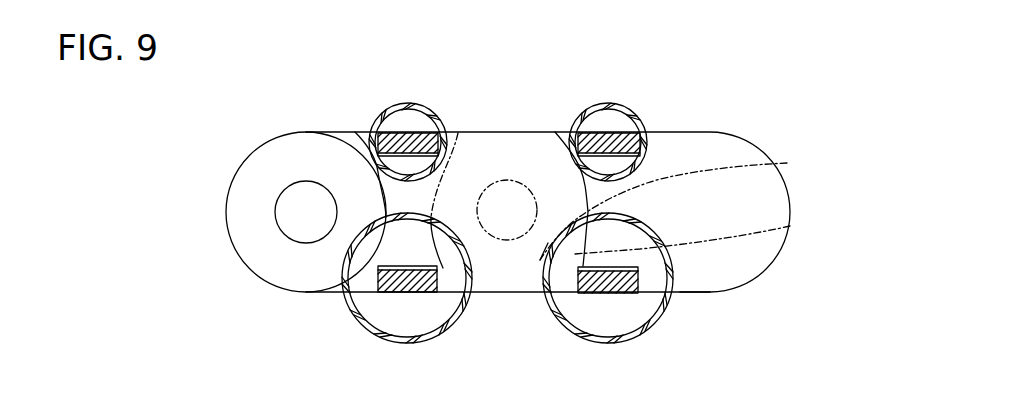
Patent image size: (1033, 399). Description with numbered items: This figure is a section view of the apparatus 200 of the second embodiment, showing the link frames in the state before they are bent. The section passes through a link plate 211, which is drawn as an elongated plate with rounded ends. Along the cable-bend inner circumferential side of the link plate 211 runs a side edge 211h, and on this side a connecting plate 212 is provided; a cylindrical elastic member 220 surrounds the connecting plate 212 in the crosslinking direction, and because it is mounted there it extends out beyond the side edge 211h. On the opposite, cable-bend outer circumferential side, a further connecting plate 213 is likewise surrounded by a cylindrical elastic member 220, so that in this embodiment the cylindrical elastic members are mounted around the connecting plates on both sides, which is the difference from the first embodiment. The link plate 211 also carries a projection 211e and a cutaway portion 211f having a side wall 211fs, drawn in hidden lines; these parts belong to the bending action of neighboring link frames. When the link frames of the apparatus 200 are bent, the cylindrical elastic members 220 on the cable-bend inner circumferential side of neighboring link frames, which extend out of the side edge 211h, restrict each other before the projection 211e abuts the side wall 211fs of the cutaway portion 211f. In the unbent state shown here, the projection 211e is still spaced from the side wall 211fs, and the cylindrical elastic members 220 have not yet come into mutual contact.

The apparatus 200 is at (238, 113).
The link plate 211 is at (741, 143).
The projection 211e is at (787, 163).
The cutaway portion 211f is at (553, 237).
The side wall 211fs is at (790, 226).
The side edge 211h is at (703, 297).
The connecting plate 212 is at (392, 286).
The connecting plate 213 is at (417, 147).
The cylindrical elastic member 220 is at (383, 112).